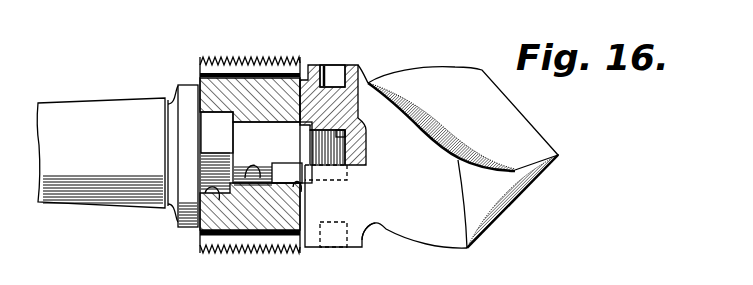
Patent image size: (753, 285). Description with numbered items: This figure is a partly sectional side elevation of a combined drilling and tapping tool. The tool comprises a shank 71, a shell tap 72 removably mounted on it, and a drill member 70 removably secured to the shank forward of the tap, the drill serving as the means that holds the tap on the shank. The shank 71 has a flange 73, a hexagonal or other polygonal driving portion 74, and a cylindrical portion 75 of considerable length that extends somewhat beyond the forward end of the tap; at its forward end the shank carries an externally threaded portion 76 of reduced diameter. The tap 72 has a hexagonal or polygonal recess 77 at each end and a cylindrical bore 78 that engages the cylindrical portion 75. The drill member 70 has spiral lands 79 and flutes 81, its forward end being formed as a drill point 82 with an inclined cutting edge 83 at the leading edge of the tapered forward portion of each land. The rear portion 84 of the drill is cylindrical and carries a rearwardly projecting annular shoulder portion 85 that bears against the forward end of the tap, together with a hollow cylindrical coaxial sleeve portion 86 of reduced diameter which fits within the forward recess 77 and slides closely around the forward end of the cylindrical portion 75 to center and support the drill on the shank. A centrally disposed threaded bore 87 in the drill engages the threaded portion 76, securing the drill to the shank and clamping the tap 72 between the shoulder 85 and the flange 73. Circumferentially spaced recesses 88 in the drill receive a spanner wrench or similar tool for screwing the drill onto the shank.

The drill member 70 is at (485, 154).
The shank 71 is at (85, 100).
The shell tap 72 is at (249, 49).
The flange 73 is at (186, 85).
The hexagonal driving portion 74 is at (208, 112).
The cylindrical portion 75 is at (243, 133).
The externally threaded portion 76 is at (350, 151).
The hexagonal recess 77 is at (219, 200).
The cylindrical bore 78 is at (252, 175).
The spiral lands 79 is at (438, 213).
The flutes 81 is at (467, 83).
The drill point 82 is at (558, 156).
The cutting edge 83 is at (521, 112).
The rear portion 84 is at (362, 240).
The annular shoulder portion 85 is at (313, 63).
The sleeve portion 86 is at (281, 119).
The threaded bore 87 is at (357, 133).
The recesses 88 is at (335, 70).